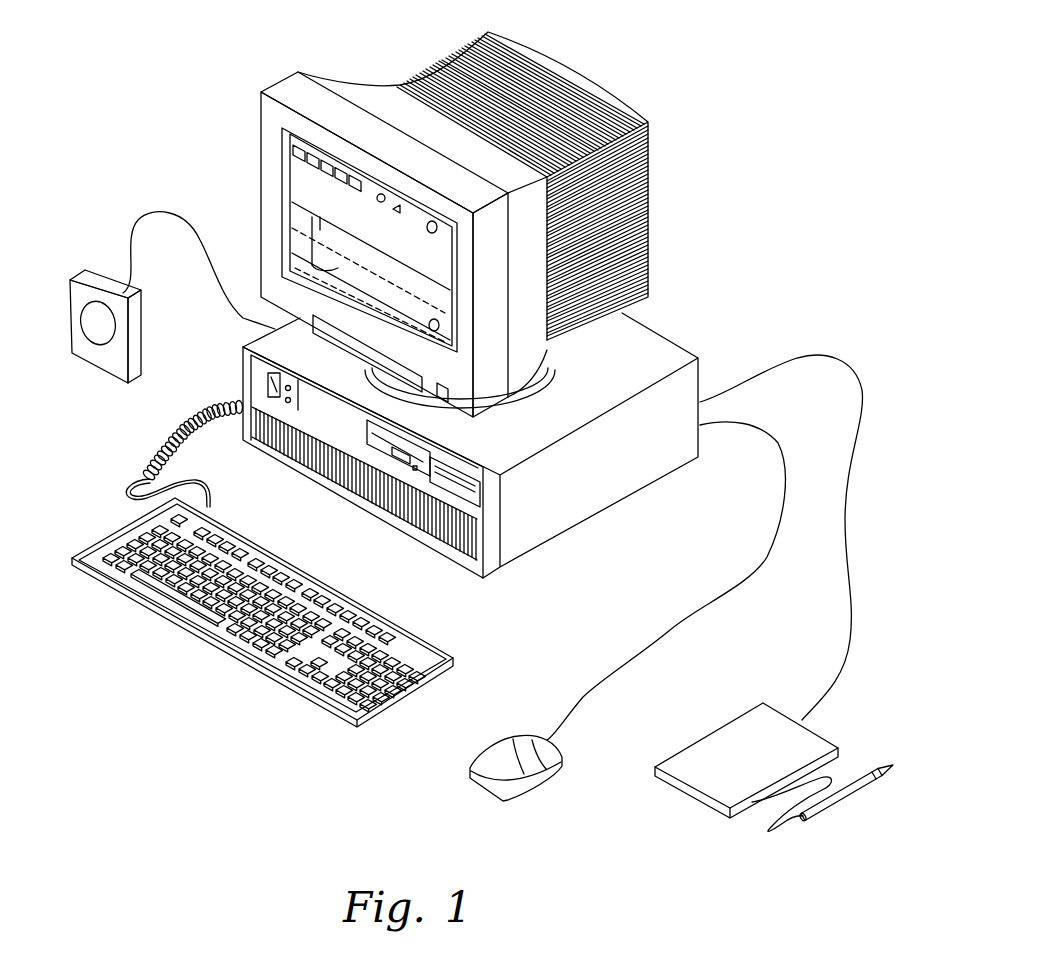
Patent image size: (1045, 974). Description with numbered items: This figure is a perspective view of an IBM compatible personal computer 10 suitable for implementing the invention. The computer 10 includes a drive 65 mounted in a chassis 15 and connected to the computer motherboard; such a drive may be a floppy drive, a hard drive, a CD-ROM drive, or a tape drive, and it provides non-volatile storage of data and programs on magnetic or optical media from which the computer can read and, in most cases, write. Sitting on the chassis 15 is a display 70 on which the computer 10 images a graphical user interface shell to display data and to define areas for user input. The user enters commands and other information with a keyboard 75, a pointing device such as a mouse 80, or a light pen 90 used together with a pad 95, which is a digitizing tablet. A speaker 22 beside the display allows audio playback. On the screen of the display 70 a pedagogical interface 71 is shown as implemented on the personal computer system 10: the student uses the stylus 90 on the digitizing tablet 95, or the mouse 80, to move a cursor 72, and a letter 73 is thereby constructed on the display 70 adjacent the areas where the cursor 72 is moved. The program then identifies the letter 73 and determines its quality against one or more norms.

The personal computer 10 is at (734, 49).
The chassis 15 is at (257, 378).
The speaker 22 is at (100, 372).
The drive 65 is at (416, 452).
The display 70 is at (262, 222).
The pedagogical interface 71 is at (381, 194).
The cursor 72 is at (328, 270).
The letter 73 is at (312, 217).
The keyboard 75 is at (232, 650).
The mouse 80 is at (470, 473).
The light pen 90 is at (825, 808).
The pad 95 is at (706, 737).